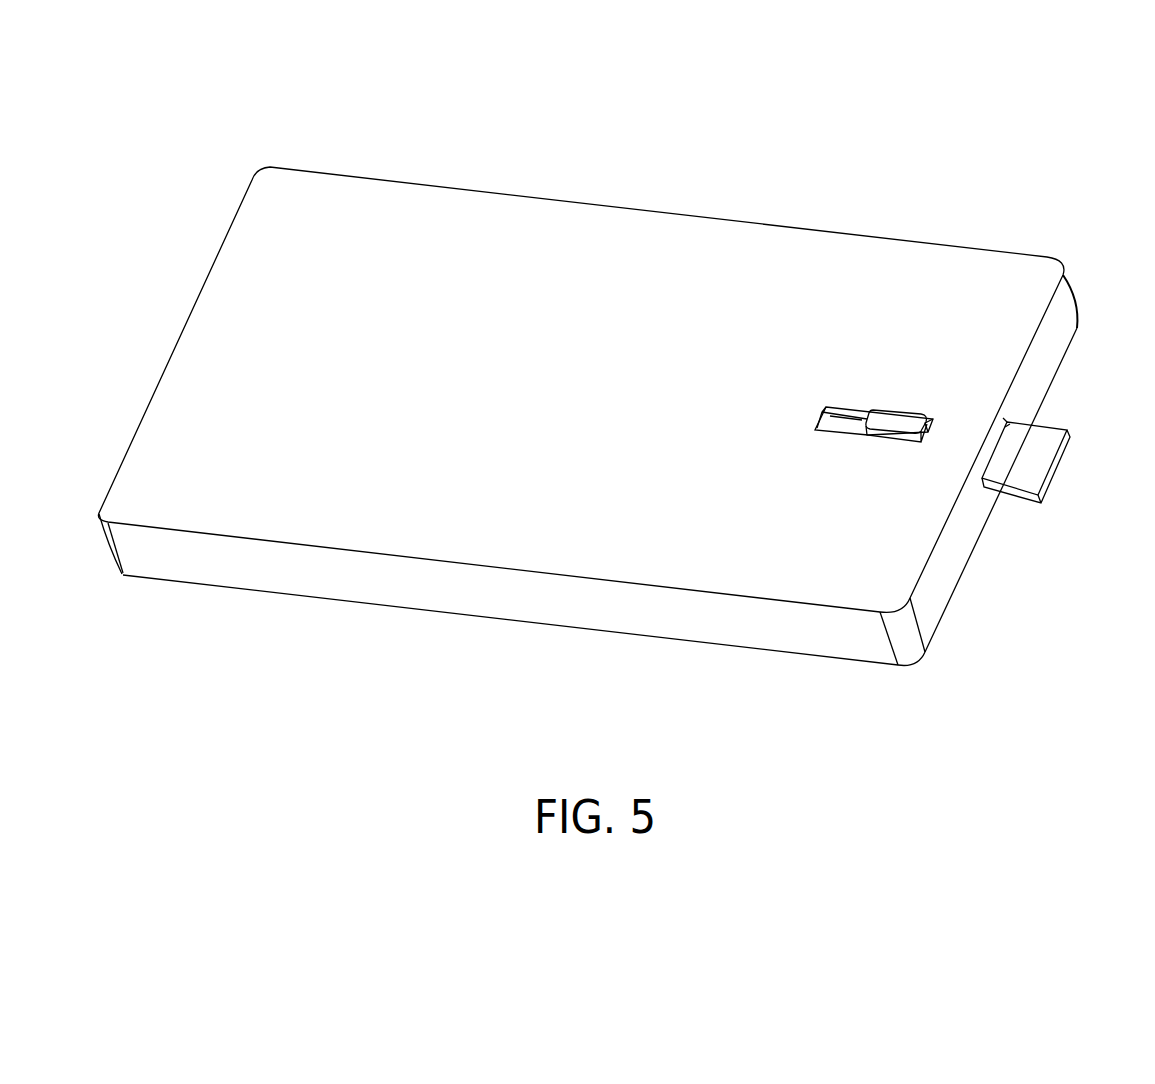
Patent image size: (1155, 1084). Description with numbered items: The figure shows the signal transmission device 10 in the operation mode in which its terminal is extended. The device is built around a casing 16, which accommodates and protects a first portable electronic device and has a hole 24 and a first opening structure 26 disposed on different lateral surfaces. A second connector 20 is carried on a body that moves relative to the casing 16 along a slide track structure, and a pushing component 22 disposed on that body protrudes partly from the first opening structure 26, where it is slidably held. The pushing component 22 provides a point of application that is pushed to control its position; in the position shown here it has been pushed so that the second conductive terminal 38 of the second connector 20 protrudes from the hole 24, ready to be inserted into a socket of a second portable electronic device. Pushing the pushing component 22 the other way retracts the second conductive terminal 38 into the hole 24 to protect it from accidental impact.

The signal transmission device 10 is at (884, 156).
The casing 16 is at (735, 237).
The second connector 20 is at (838, 420).
The pushing component 22 is at (905, 420).
The hole 24 is at (1010, 421).
The first opening structure 26 is at (848, 428).
The second conductive terminal 38 is at (1033, 458).